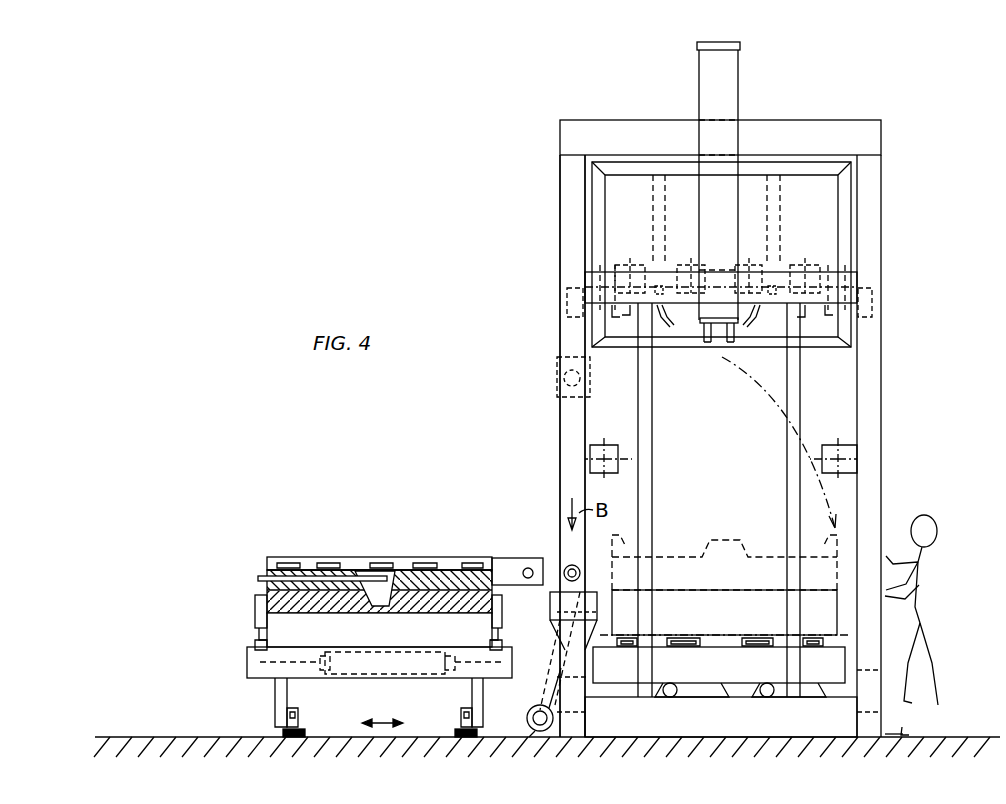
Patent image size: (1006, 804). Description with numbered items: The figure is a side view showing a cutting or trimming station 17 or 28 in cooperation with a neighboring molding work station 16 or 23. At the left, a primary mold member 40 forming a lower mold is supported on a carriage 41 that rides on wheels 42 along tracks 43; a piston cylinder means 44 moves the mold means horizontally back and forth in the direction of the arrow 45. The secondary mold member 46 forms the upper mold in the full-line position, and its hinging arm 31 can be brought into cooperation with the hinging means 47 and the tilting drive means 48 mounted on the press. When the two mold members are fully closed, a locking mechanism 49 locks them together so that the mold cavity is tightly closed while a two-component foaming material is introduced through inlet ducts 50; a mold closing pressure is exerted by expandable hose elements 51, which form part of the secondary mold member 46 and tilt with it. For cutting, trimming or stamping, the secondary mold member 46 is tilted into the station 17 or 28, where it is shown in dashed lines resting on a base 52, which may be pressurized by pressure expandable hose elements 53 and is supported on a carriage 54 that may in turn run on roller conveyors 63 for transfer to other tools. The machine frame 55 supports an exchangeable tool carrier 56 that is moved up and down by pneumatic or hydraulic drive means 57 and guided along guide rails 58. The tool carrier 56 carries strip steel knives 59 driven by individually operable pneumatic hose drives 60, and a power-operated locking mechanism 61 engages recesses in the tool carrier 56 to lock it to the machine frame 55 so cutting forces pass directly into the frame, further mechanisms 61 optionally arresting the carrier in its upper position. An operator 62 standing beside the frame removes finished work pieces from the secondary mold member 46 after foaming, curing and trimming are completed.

The work station 16 is at (346, 505).
The work station 23 is at (379, 591).
The station 17 is at (932, 158).
The station 28 is at (719, 446).
The hinging arm 31 is at (505, 567).
The primary mold member 40 is at (389, 639).
The carriage 41 is at (247, 668).
The wheels 42 is at (312, 707).
The tracks 43 is at (300, 738).
The piston cylinder means 44 is at (388, 678).
The arrow 45 is at (380, 730).
The secondary mold member 46 is at (722, 556).
The hinging means 47 is at (566, 567).
The tilting drive means 48 is at (544, 732).
The locking mechanism 49 is at (255, 613).
The inlet ducts 50 is at (262, 575).
The expandable hose elements 51 is at (364, 570).
The base 52 is at (736, 624).
The pressure expandable hose elements 53 is at (747, 645).
The carriage 54 is at (822, 675).
The machine frame 55 is at (562, 193).
The tool carrier 56 is at (776, 160).
The drive means 57 is at (699, 75).
The guide rails 58 is at (650, 430).
The strip steel knives 59 is at (672, 322).
The pneumatic hose drive 60 is at (630, 263).
The locking mechanism 61 is at (567, 305).
The operator 62 is at (933, 564).
The roller conveyors 63 is at (767, 696).